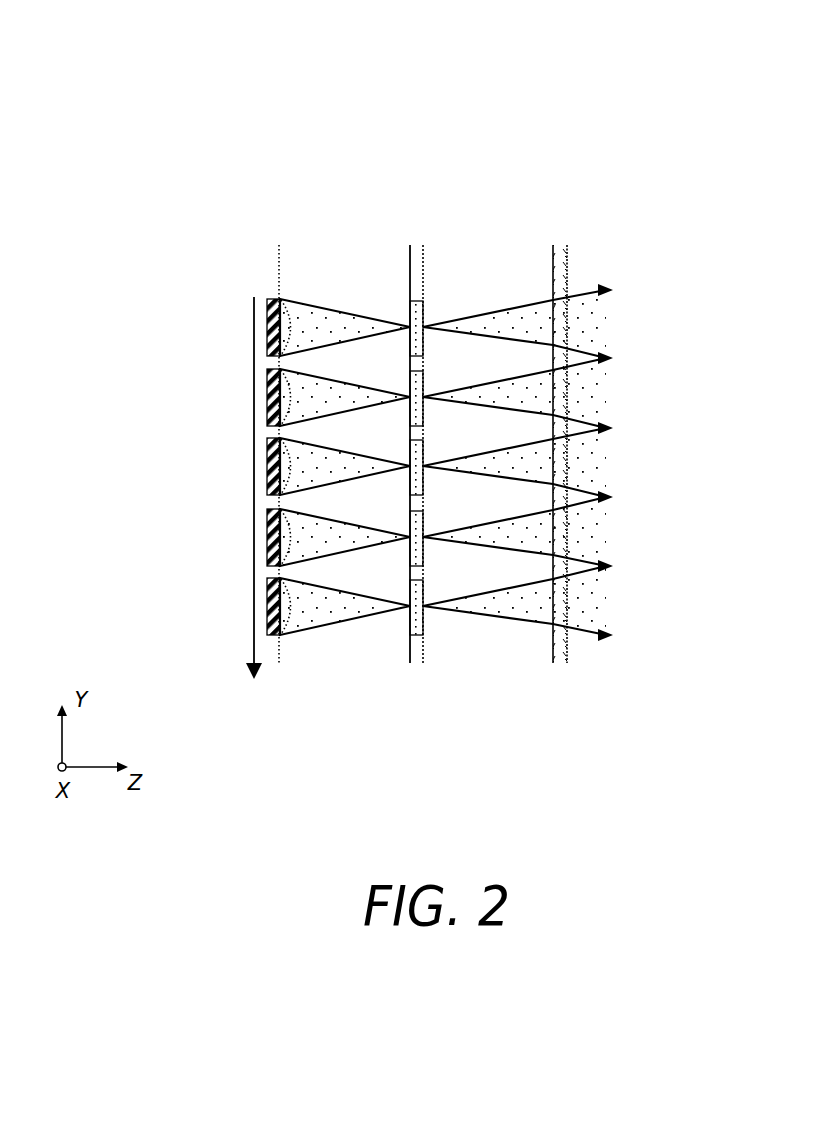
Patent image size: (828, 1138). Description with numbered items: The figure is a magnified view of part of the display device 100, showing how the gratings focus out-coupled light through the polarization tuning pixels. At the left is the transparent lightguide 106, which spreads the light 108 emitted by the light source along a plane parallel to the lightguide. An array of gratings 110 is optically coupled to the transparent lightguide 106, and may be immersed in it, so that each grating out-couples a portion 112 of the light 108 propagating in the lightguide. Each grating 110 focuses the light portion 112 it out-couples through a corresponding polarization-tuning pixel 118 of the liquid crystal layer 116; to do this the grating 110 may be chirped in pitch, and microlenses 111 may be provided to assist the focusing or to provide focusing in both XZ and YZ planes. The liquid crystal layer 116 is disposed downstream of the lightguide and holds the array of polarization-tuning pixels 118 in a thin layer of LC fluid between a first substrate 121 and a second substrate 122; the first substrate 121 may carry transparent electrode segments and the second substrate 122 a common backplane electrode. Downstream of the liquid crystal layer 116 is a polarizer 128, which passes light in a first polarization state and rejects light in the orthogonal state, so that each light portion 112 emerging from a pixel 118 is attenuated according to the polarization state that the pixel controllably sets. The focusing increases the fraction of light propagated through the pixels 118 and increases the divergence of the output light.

The display device 100 is at (496, 102).
The transparent lightguide 106 is at (203, 283).
The light 108 is at (254, 448).
The gratings 110 is at (268, 327).
The microlenses 111 is at (306, 307).
The portions of the light 112 is at (592, 323).
The liquid crystal layer 116 is at (414, 454).
The polarization-tuning pixels 118 is at (407, 480).
The first substrate 121 is at (327, 277).
The second substrate 122 is at (461, 277).
The polarizer 128 is at (561, 245).